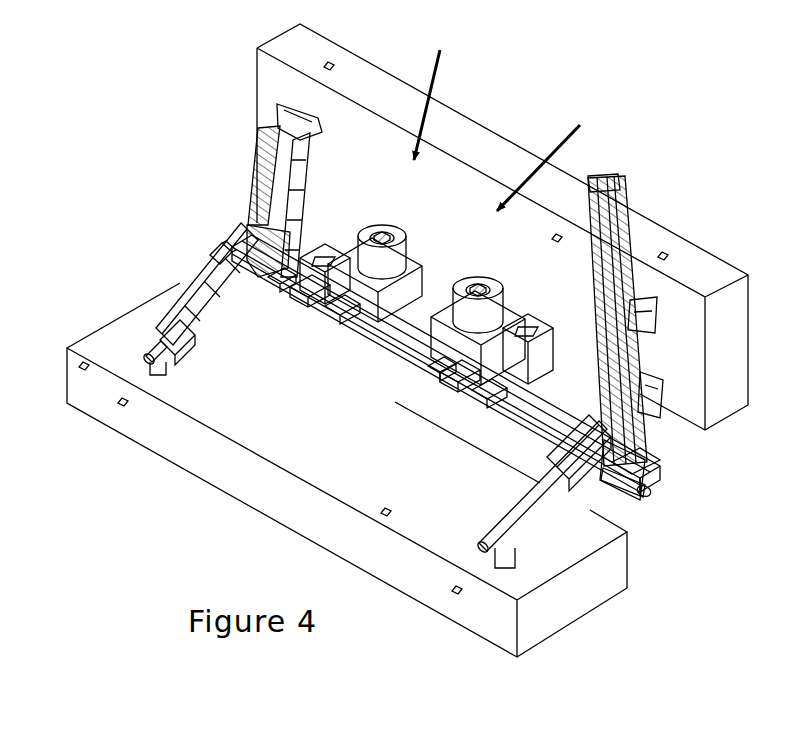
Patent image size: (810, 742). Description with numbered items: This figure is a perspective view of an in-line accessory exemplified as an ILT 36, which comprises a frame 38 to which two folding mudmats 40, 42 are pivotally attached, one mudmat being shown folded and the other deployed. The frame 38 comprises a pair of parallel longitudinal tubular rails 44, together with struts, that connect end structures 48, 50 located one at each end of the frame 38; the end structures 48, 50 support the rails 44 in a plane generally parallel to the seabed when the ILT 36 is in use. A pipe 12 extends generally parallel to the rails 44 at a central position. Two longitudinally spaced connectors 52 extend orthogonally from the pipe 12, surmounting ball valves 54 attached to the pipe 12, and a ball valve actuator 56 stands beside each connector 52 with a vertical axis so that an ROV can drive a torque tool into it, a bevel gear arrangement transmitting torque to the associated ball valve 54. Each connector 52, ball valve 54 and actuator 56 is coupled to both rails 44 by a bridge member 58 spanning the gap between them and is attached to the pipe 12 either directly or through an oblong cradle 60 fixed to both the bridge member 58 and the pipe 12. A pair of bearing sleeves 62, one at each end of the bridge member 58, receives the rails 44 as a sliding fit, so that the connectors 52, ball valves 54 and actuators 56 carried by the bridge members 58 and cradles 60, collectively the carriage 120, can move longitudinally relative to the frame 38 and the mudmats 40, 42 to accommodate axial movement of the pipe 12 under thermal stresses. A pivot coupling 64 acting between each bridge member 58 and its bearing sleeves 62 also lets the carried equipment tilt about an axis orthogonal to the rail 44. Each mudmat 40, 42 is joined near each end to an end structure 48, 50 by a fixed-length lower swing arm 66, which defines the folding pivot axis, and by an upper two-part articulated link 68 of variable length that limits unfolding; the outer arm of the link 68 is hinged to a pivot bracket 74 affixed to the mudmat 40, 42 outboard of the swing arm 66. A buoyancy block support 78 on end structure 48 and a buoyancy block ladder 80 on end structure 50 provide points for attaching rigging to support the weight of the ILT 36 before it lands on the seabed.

The pipe 12 is at (632, 487).
The ILT 36 is at (145, 84).
The frame 38 is at (221, 221).
The folding mudmat 40 is at (465, 140).
The folding mudmat 42 is at (98, 333).
The longitudinal tubular rail 44 is at (578, 382).
The end structure 48 is at (250, 213).
The end structure 50 is at (643, 430).
The connector 52 is at (383, 231).
The ball valve 54 is at (368, 338).
The ball valve actuator 56 is at (337, 232).
The bridge member 58 is at (300, 292).
The cradle 60 is at (420, 262).
The bearing sleeve 62 is at (338, 308).
The pivot coupling 64 is at (290, 300).
The lower swing arm 66 is at (207, 283).
The upper two-part articulated link 68 is at (180, 297).
The pivot bracket 74 is at (160, 363).
The buoyancy block support 78 is at (258, 128).
The buoyancy block ladder 80 is at (617, 223).
The carriage 120 is at (512, 116).